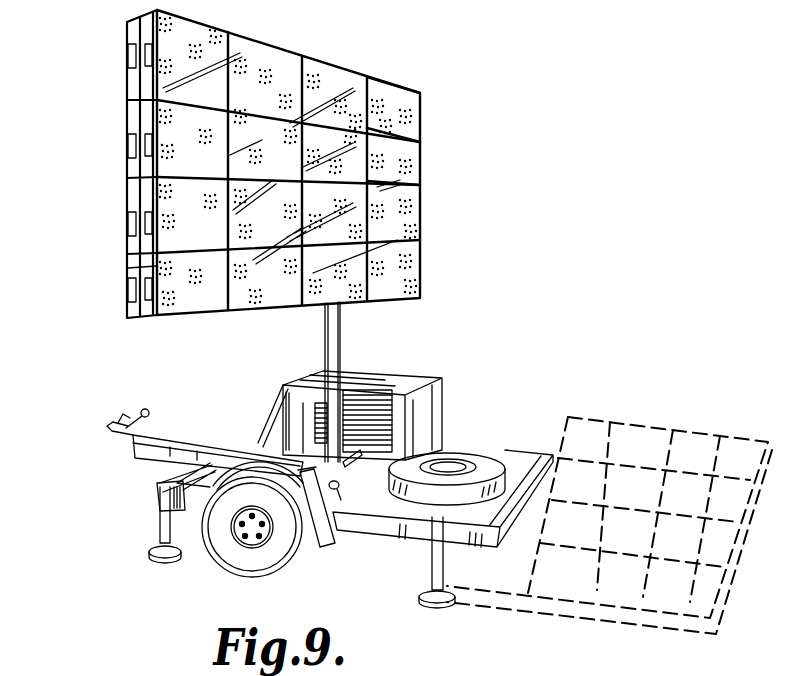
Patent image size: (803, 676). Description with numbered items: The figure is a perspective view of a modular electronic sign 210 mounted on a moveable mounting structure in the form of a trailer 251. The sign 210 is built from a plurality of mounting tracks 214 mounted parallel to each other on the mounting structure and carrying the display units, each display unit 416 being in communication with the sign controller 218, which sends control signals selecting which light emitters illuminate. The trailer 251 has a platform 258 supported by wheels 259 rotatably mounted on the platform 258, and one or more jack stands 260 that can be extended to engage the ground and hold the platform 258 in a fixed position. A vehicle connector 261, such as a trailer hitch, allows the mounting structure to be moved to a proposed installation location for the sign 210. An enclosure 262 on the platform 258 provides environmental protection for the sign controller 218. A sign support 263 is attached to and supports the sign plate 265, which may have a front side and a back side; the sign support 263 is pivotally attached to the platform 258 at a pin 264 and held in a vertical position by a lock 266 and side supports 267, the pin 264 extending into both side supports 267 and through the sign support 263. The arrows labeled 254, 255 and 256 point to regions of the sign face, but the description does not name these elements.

The modular electronic sign 210 is at (432, 264).
The mounting tracks 214 is at (127, 50).
The sign controller 218 is at (307, 388).
The trailer 251 is at (518, 447).
The display panel 254 is at (441, 130).
The display panel 255 is at (429, 210).
The display panel 256 is at (404, 79).
The platform 258 is at (550, 493).
The wheels 259 is at (243, 563).
The jack stands 260 is at (160, 518).
The vehicle connector 261 is at (190, 437).
The enclosure 262 is at (352, 446).
The sign support 263 is at (341, 328).
The pin 264 is at (341, 497).
The sign plate 265 is at (127, 195).
The lock 266 is at (377, 377).
The side supports 267 is at (410, 447).
The display unit 416 is at (242, 124).